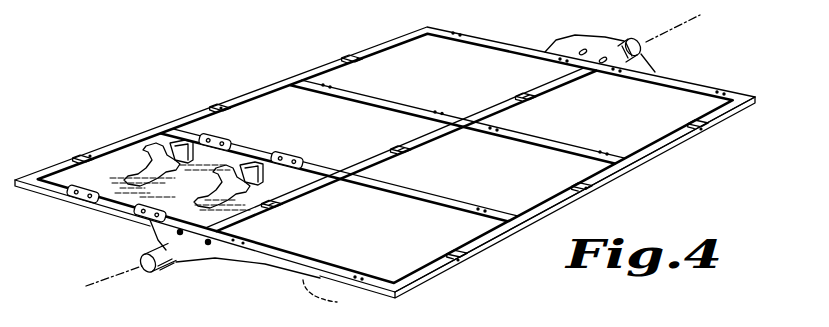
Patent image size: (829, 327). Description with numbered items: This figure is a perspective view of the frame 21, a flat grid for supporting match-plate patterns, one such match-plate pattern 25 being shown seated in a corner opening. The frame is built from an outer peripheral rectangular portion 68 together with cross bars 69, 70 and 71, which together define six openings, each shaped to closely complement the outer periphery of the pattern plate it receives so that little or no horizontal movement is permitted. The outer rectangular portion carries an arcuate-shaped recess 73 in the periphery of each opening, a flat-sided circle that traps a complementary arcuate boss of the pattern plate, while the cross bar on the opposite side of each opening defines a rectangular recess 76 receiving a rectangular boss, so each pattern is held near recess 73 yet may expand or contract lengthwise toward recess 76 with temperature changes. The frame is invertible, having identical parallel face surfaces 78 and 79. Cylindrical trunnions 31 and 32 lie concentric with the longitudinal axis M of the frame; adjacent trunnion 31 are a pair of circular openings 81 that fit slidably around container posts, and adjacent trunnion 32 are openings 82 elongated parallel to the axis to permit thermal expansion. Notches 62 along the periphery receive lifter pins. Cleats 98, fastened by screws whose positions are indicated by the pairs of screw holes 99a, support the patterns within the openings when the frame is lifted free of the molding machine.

The frame 21 is at (40, 166).
The match-plate pattern 25 is at (107, 180).
The trunnion 31 is at (150, 273).
The trunnion 32 is at (628, 40).
The notch 62 is at (91, 154).
The outer peripheral rectangular portion 68 is at (565, 212).
The cross bar 69 is at (555, 142).
The cross bar 70 is at (437, 200).
The cross bar 71 is at (347, 168).
The arcuate-shaped recess 73 is at (84, 154).
The rectangular recess 76 is at (283, 203).
The face surface 78 is at (272, 256).
The face surface 79 is at (332, 296).
The opening 81 is at (176, 234).
The opening 82 is at (603, 58).
The cleat 98 is at (226, 136).
The screw holes 99a is at (331, 86).
The longitudinal axis M is at (389, 154).